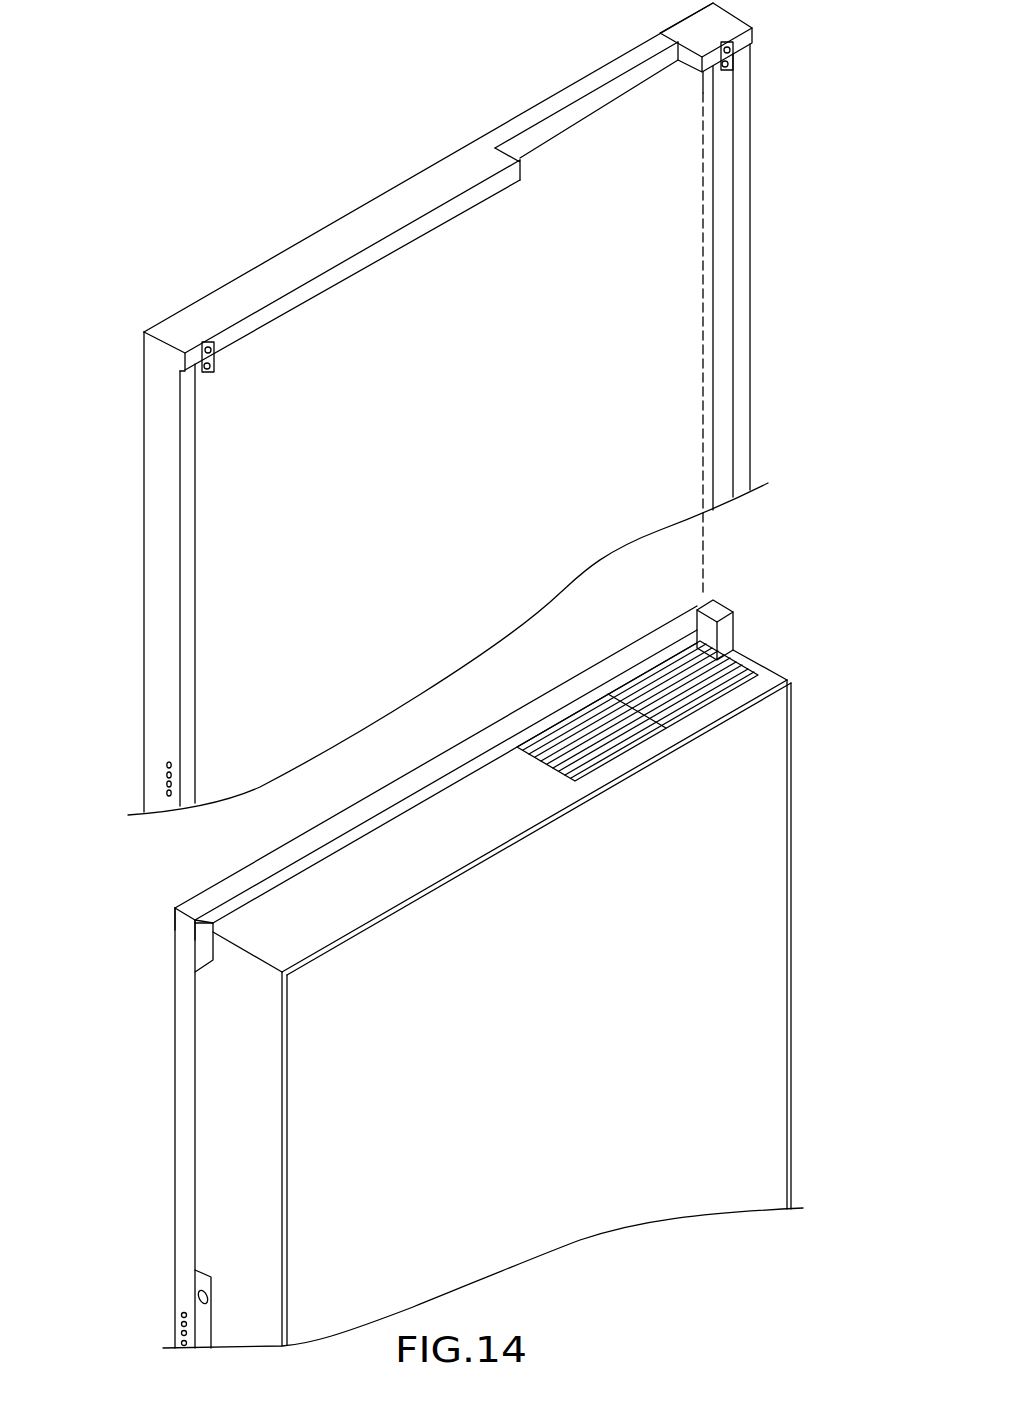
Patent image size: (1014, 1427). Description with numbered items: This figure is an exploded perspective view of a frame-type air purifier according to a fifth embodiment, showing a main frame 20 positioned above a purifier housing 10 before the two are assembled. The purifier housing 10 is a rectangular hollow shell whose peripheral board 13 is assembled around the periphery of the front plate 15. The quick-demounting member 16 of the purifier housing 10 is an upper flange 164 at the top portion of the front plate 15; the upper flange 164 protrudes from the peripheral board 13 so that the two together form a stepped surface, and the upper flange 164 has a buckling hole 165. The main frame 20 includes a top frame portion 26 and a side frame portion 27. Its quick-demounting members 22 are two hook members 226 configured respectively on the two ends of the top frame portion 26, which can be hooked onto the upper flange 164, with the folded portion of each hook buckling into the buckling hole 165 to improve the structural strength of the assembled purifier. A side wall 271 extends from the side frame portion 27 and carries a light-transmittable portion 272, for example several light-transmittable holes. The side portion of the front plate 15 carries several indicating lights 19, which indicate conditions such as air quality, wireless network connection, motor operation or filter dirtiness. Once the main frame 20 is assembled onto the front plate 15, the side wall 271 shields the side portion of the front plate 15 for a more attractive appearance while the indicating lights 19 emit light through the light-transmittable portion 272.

The main frame 20 is at (108, 66).
The quick-demounting member 22 is at (742, 72).
The top frame portion 26 is at (650, 50).
The side frame portion 27 is at (163, 474).
The hook member 226 is at (738, 49).
The side wall 271 is at (188, 540).
The light-transmittable portion 272 is at (166, 765).
The purifier housing 10 is at (780, 650).
The peripheral board 13 is at (250, 935).
The front plate 15 is at (190, 1034).
The quick-demounting member 16 is at (186, 871).
The upper flange 164 is at (200, 908).
The buckling hole 165 is at (202, 929).
The indicating light 19 is at (181, 1315).